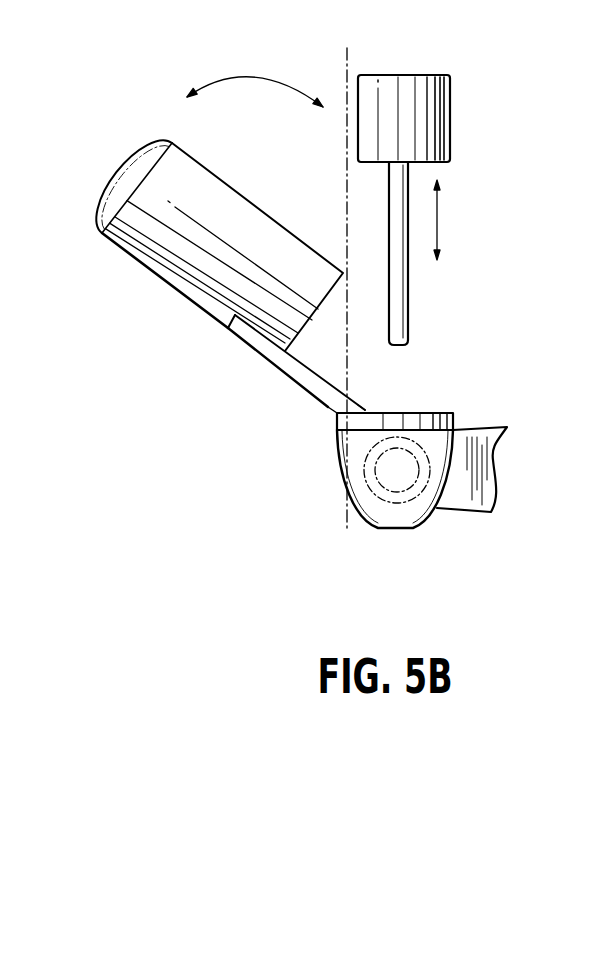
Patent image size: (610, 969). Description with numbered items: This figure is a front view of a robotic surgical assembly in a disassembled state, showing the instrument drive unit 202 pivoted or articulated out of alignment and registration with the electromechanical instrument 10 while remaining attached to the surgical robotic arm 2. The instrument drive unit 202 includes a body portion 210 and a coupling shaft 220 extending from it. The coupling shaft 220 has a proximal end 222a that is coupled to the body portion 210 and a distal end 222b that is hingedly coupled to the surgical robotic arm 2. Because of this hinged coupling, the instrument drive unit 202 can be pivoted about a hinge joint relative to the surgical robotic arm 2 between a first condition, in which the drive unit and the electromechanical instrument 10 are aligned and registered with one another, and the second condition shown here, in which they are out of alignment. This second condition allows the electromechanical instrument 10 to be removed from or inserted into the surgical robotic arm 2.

The surgical robotic arm 2 is at (490, 437).
The electromechanical instrument 10 is at (455, 108).
The instrument drive unit 202 is at (180, 140).
The body portion 210 is at (126, 252).
The coupling shaft 220 is at (277, 370).
The proximal end 222a is at (232, 318).
The distal end 222b is at (338, 406).